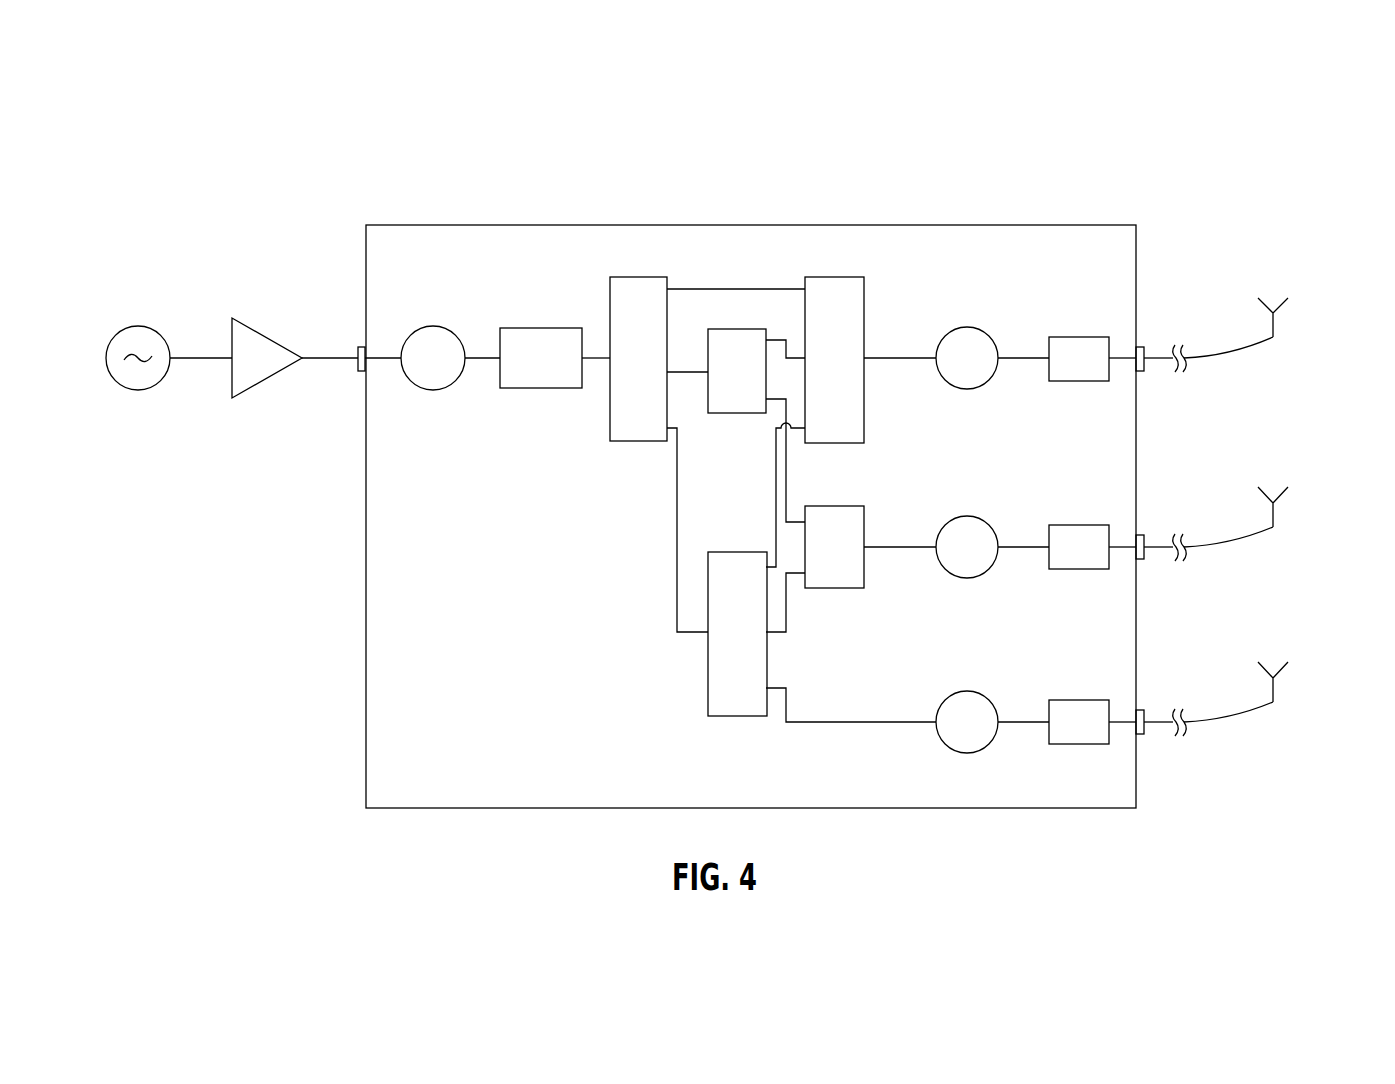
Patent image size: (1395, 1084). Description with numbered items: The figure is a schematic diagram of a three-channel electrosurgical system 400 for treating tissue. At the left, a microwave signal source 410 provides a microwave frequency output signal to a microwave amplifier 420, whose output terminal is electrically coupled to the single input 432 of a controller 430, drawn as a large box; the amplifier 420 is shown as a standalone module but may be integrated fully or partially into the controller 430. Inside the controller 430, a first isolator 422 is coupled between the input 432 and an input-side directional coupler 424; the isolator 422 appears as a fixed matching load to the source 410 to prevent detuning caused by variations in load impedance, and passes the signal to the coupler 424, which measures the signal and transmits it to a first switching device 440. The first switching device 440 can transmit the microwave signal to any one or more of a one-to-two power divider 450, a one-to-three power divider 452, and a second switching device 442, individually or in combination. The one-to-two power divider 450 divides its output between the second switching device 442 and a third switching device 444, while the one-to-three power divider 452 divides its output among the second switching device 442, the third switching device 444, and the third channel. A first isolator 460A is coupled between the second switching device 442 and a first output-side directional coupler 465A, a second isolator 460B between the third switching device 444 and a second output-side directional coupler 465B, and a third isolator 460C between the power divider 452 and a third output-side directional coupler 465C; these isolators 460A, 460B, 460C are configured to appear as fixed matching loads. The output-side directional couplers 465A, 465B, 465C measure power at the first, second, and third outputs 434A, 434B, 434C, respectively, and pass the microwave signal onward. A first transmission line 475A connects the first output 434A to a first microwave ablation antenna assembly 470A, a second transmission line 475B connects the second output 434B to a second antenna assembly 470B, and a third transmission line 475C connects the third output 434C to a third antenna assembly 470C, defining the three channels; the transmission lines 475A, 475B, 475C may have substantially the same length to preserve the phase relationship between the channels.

The electrosurgical system 400 is at (353, 130).
The microwave signal source 410 is at (138, 327).
The microwave amplifier 420 is at (232, 318).
The input 432 is at (360, 372).
The controller 430 is at (487, 225).
The first isolator 422 is at (433, 326).
The input-side directional coupler 424 is at (541, 328).
The first switching device 440 is at (638, 277).
The 1:2 power divider 450 is at (737, 329).
The second switching device 442 is at (838, 277).
The third switching device 444 is at (838, 506).
The 1:3 power divider 452 is at (707, 675).
The first isolator 460A is at (967, 327).
The second isolator 460B is at (967, 516).
The third isolator 460C is at (967, 691).
The first output-side directional coupler 465A is at (1080, 381).
The second output-side directional coupler 465B is at (1080, 569).
The third output-side directional coupler 465C is at (1080, 744).
The first output 434A is at (1142, 347).
The second output 434B is at (1142, 535).
The third output 434C is at (1142, 710).
The first transmission line 475A is at (1220, 360).
The second transmission line 475B is at (1220, 549).
The third transmission line 475C is at (1220, 724).
The first microwave ablation antenna assembly 470A is at (1284, 323).
The second microwave ablation antenna assembly 470B is at (1284, 512).
The third microwave ablation antenna assembly 470C is at (1284, 687).